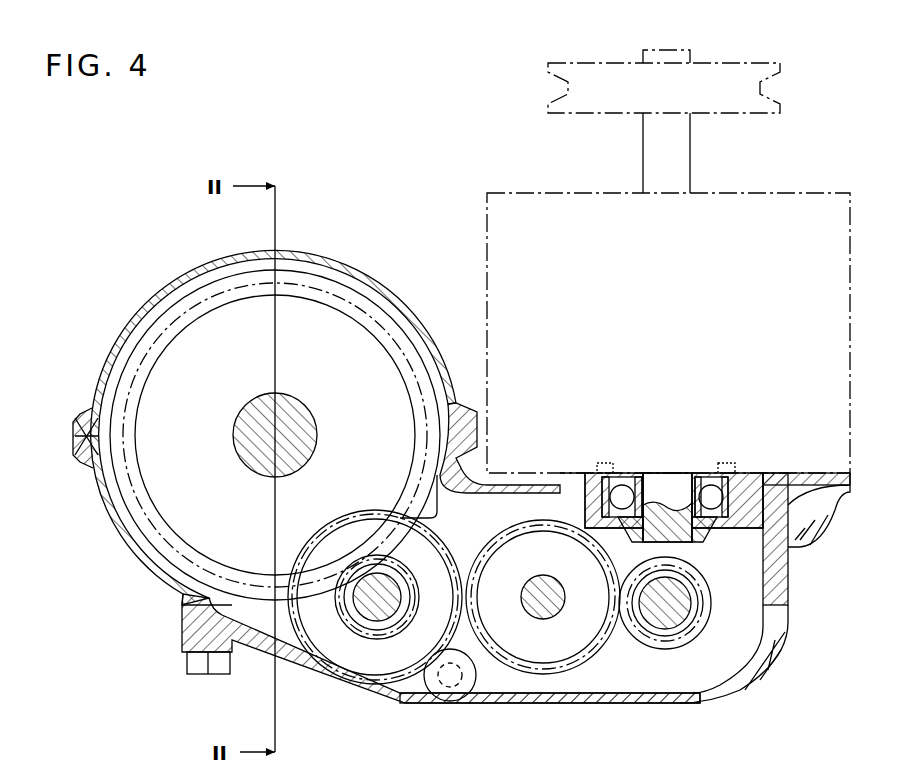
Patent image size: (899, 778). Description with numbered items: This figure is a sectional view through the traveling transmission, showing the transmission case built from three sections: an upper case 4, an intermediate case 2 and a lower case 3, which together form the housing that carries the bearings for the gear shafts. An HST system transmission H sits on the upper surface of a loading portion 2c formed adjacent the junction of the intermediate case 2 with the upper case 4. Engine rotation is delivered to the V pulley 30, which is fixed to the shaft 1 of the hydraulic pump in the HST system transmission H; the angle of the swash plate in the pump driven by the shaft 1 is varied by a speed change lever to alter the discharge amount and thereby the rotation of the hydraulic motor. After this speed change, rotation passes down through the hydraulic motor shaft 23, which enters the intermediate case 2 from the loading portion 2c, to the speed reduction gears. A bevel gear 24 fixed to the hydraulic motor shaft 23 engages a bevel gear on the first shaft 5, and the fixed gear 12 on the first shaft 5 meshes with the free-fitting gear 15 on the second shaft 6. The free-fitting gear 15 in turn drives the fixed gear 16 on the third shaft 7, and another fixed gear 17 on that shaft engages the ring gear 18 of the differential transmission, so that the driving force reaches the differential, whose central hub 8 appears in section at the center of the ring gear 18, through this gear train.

The shaft 1 is at (690, 163).
The intermediate case 2 is at (103, 512).
The loading portion 2c is at (598, 472).
The lower case 3 is at (512, 703).
The upper case 4 is at (300, 250).
The first shaft 5 is at (683, 614).
The second shaft 6 is at (548, 615).
The third shaft 7 is at (382, 614).
The wheel shaft 8 is at (306, 420).
The fixed gear 12 is at (660, 650).
The free-fitting gear 15 is at (537, 520).
The fixed gear 16 is at (445, 540).
The fixed gear 17 is at (345, 628).
The ring gear 18 is at (400, 322).
The hydraulic motor shaft 23 is at (667, 488).
The bevel gear 24 is at (703, 532).
The V pulley 30 is at (762, 66).
The HST system transmission H is at (852, 327).